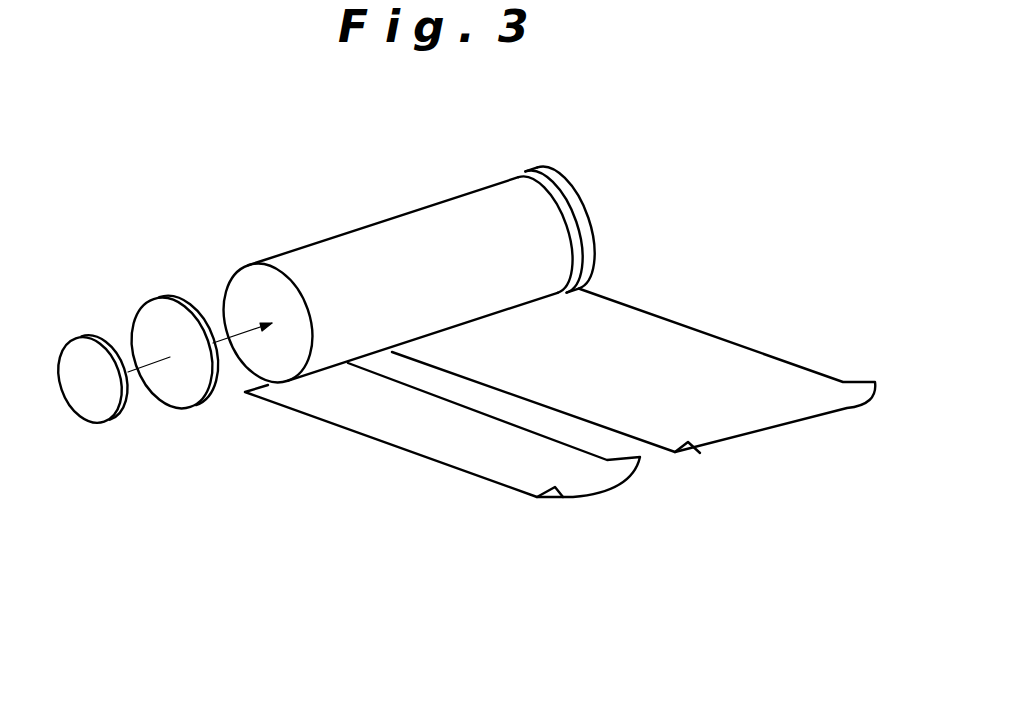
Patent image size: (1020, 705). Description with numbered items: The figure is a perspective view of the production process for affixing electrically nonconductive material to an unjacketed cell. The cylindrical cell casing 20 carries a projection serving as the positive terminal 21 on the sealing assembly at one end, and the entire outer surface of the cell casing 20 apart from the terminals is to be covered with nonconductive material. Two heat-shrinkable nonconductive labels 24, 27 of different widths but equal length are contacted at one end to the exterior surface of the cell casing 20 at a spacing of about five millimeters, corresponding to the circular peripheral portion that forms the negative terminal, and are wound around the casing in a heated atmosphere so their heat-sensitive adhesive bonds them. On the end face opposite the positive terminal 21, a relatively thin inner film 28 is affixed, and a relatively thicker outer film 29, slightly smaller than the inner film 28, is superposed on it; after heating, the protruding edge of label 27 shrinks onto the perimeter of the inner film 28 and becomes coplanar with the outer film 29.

The cell casing 20 is at (383, 242).
The positive terminal 21 is at (575, 218).
The heat-shrinkable nonconductive label 24 is at (657, 350).
The heat-shrinkable nonconductive label 27 is at (460, 447).
The inner film 28 is at (185, 370).
The outer film 29 is at (100, 410).